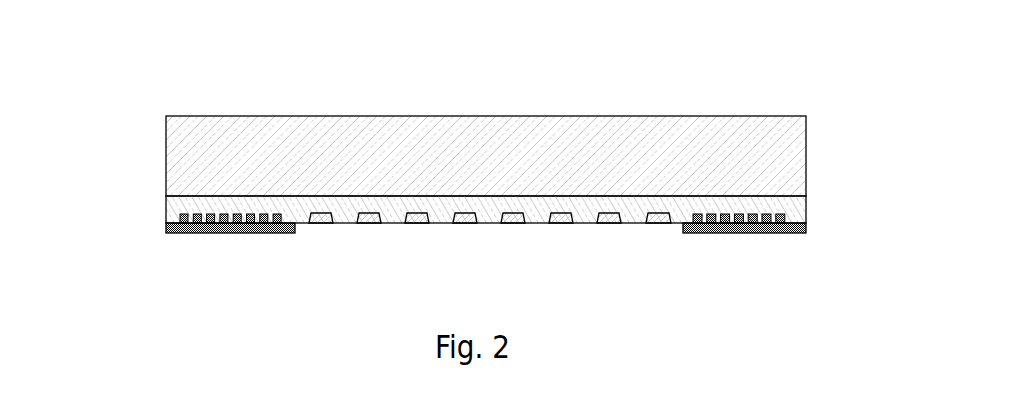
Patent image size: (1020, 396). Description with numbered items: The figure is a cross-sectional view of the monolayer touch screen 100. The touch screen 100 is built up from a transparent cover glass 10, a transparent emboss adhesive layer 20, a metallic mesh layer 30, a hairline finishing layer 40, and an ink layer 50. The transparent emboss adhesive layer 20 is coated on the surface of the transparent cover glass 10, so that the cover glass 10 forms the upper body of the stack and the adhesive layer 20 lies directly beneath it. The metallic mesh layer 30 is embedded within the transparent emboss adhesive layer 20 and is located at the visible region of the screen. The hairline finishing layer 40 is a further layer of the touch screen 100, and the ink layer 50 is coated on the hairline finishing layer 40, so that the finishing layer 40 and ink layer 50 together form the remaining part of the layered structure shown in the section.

The monolayer touch screen 100 is at (471, 155).
The transparent cover glass 10 is at (173, 159).
The transparent emboss adhesive layer 20 is at (781, 210).
The metallic mesh layer 30 is at (678, 197).
The hairline finishing layer 40 is at (788, 218).
The ink layer 50 is at (786, 228).